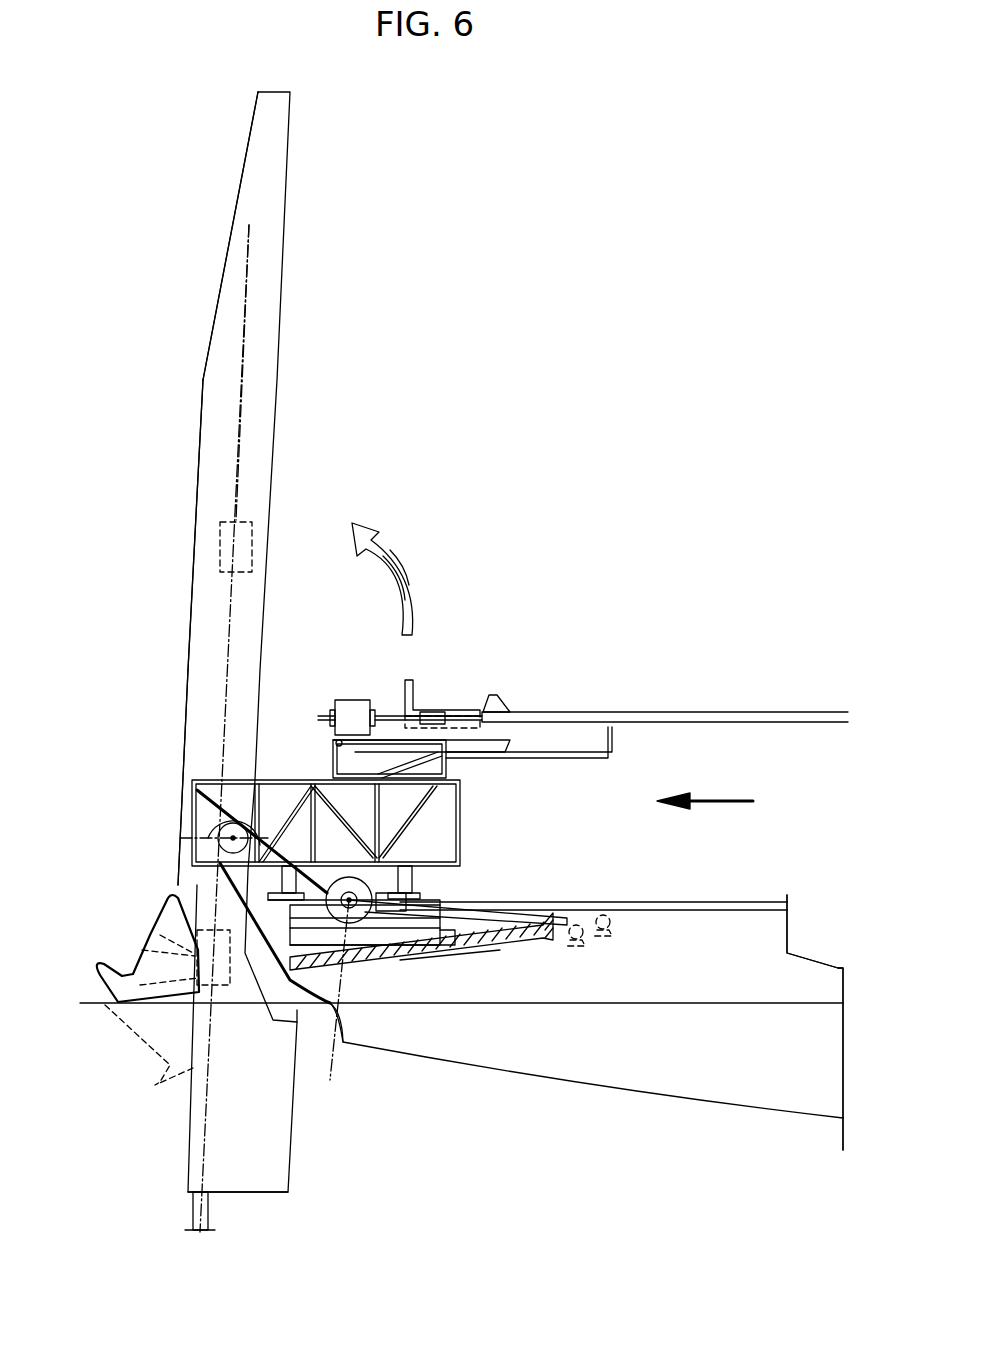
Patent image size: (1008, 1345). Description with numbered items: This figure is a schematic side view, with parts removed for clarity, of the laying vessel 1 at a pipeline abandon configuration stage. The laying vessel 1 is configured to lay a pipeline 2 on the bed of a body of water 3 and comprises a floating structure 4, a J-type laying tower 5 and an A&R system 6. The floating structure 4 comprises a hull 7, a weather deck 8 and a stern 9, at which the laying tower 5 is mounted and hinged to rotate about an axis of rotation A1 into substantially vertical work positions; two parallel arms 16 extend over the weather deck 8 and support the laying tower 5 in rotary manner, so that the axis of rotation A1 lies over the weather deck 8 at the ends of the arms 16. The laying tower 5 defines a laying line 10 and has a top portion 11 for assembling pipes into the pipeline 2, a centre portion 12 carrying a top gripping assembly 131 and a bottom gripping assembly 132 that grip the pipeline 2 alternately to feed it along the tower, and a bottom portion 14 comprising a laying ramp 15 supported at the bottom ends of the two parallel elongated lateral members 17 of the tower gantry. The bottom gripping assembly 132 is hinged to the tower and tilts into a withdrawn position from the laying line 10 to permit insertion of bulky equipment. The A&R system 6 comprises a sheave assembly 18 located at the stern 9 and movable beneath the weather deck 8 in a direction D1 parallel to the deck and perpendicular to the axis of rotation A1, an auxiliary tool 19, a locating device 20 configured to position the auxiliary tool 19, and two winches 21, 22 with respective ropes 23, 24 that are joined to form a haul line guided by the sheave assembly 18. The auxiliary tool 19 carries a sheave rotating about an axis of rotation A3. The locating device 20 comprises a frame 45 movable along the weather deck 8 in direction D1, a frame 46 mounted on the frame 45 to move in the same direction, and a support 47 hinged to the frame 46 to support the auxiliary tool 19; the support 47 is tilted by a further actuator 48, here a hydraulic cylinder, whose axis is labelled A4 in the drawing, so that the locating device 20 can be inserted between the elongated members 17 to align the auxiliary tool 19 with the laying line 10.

The laying vessel 1 is at (693, 336).
The pipeline 2 is at (185, 1216).
The body of water 3 is at (825, 1030).
The floating structure 4 is at (812, 943).
The J-type laying tower 5 is at (332, 285).
The A&R system 6 is at (580, 657).
The hull 7 is at (825, 972).
The weather deck 8 is at (730, 904).
The stern 9 is at (352, 1085).
The laying line 10 is at (278, 380).
The top portion 11 is at (200, 229).
The centre portion 12 is at (160, 614).
The bottom portion 14 is at (142, 1102).
The laying ramp 15 is at (275, 1188).
The arms 16 is at (265, 883).
The elongated lateral members 17 is at (203, 420).
The sheave assembly 18 is at (500, 963).
The auxiliary tool 19 is at (740, 690).
The locating device 20 is at (572, 820).
The winch 21 is at (576, 950).
The winch 22 is at (608, 944).
The rope 23 is at (440, 960).
The rope 24 is at (440, 905).
The frame 45 is at (460, 850).
The frame 46 is at (450, 758).
The support 47 is at (510, 757).
The actuator 48 is at (443, 710).
The top gripping assembly 131 is at (216, 548).
The bottom gripping assembly 132 is at (158, 897).
The axis of rotation A1 is at (220, 835).
The axis of rotation A3 is at (348, 1042).
The motor axis A4 is at (338, 742).
The direction D1 is at (718, 782).